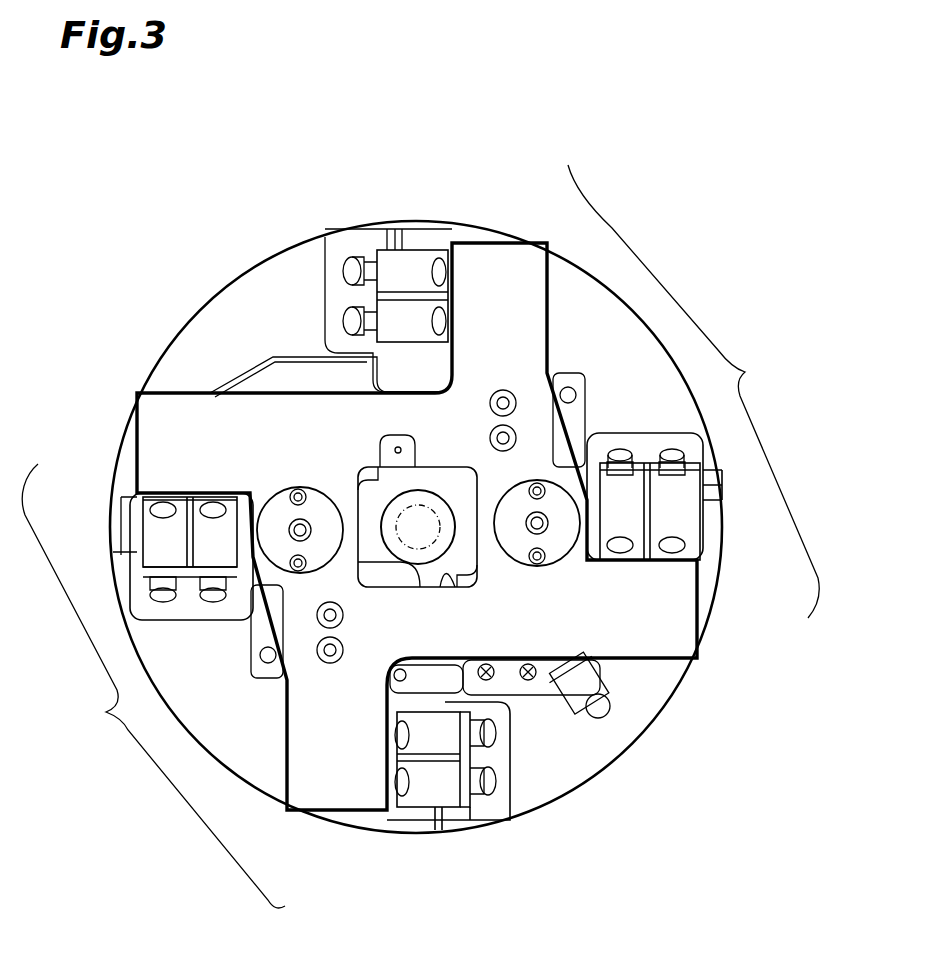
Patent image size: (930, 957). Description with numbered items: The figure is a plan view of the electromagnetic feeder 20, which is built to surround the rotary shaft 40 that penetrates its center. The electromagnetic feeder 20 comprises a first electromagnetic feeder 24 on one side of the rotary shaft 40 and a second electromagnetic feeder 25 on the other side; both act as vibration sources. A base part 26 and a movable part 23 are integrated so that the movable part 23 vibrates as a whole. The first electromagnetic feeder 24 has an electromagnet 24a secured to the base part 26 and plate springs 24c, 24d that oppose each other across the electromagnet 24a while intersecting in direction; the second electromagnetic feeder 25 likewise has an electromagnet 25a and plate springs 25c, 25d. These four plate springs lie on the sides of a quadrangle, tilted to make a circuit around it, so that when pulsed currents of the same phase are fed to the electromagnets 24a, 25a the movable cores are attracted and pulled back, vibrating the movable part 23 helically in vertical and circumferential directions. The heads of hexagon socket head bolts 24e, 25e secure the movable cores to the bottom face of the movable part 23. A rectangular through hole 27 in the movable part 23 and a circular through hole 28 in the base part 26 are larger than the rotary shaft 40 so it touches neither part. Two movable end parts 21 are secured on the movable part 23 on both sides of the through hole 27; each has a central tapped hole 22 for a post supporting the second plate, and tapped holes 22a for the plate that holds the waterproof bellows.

The electromagnetic feeder 20 is at (160, 290).
The movable end parts 21 is at (270, 505).
The tapped holes 22 is at (307, 522).
The tapped holes 22a is at (298, 489).
The movable part 23 is at (673, 637).
The first electromagnetic feeder 24 is at (153, 686).
The electromagnet 24a is at (250, 648).
The plate spring 24c is at (160, 540).
The plate spring 24d is at (428, 792).
The heads of hexagon socket head bolts 24e is at (343, 645).
The second electromagnetic feeder 25 is at (693, 391).
The electromagnet 25a is at (590, 407).
The plate spring 25c is at (673, 520).
The plate spring 25d is at (418, 265).
The heads of hexagon socket head bolts 25e is at (490, 440).
The base part 26 is at (610, 752).
The rectangular through hole 27 is at (452, 585).
The circular through hole 28 is at (410, 492).
The rotary shaft 40 is at (425, 520).